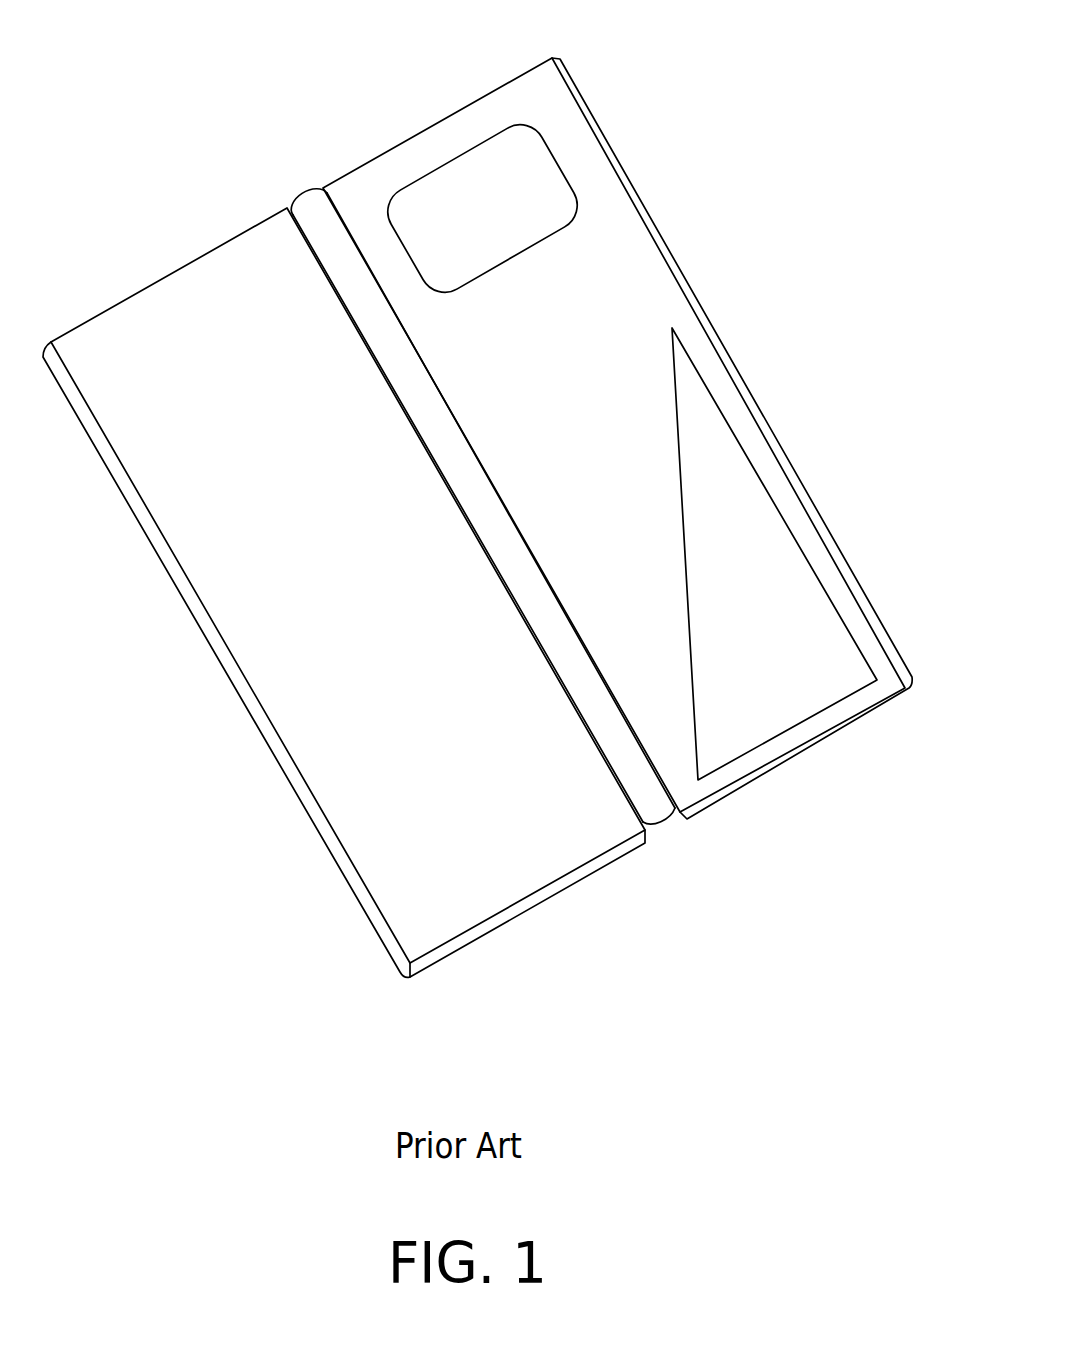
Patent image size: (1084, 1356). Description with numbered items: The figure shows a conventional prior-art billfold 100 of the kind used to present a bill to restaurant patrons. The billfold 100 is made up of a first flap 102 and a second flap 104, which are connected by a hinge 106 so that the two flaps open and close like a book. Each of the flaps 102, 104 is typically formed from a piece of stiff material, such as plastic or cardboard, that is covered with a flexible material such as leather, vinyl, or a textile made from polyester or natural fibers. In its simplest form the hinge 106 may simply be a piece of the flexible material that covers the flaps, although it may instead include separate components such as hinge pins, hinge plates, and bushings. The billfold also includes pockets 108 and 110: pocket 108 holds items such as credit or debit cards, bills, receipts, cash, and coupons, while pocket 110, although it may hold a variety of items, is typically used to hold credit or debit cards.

The billfold 100 is at (477, 494).
The first flap 102 is at (708, 318).
The second flap 104 is at (322, 846).
The hinge 106 is at (668, 823).
The pocket 108 is at (767, 489).
The pocket 110 is at (556, 168).